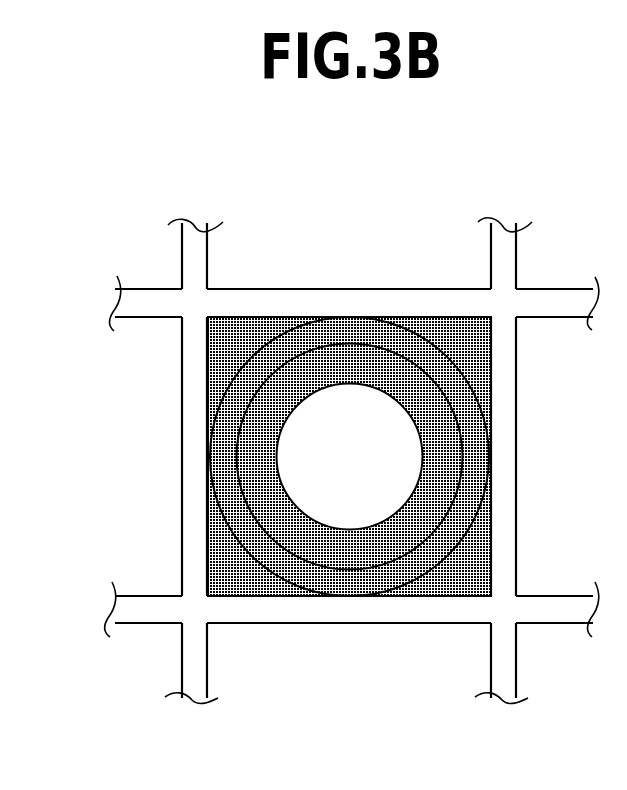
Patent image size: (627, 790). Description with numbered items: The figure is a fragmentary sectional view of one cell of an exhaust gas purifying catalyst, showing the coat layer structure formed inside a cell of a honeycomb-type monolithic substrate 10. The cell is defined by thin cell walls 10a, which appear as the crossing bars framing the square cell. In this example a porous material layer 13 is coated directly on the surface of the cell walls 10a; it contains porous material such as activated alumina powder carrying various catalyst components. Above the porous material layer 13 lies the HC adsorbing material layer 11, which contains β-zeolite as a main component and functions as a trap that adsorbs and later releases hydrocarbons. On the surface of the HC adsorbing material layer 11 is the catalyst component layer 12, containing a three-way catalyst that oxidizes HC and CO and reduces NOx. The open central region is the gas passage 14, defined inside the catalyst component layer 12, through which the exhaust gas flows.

The honeycomb-type monolithic substrate 10 is at (181, 258).
The cell wall 10a is at (346, 305).
The HC adsorbing material layer 11 is at (292, 573).
The catalyst component layer 12 is at (430, 398).
The porous material layer 13 is at (225, 354).
The gas passage 14 is at (365, 480).